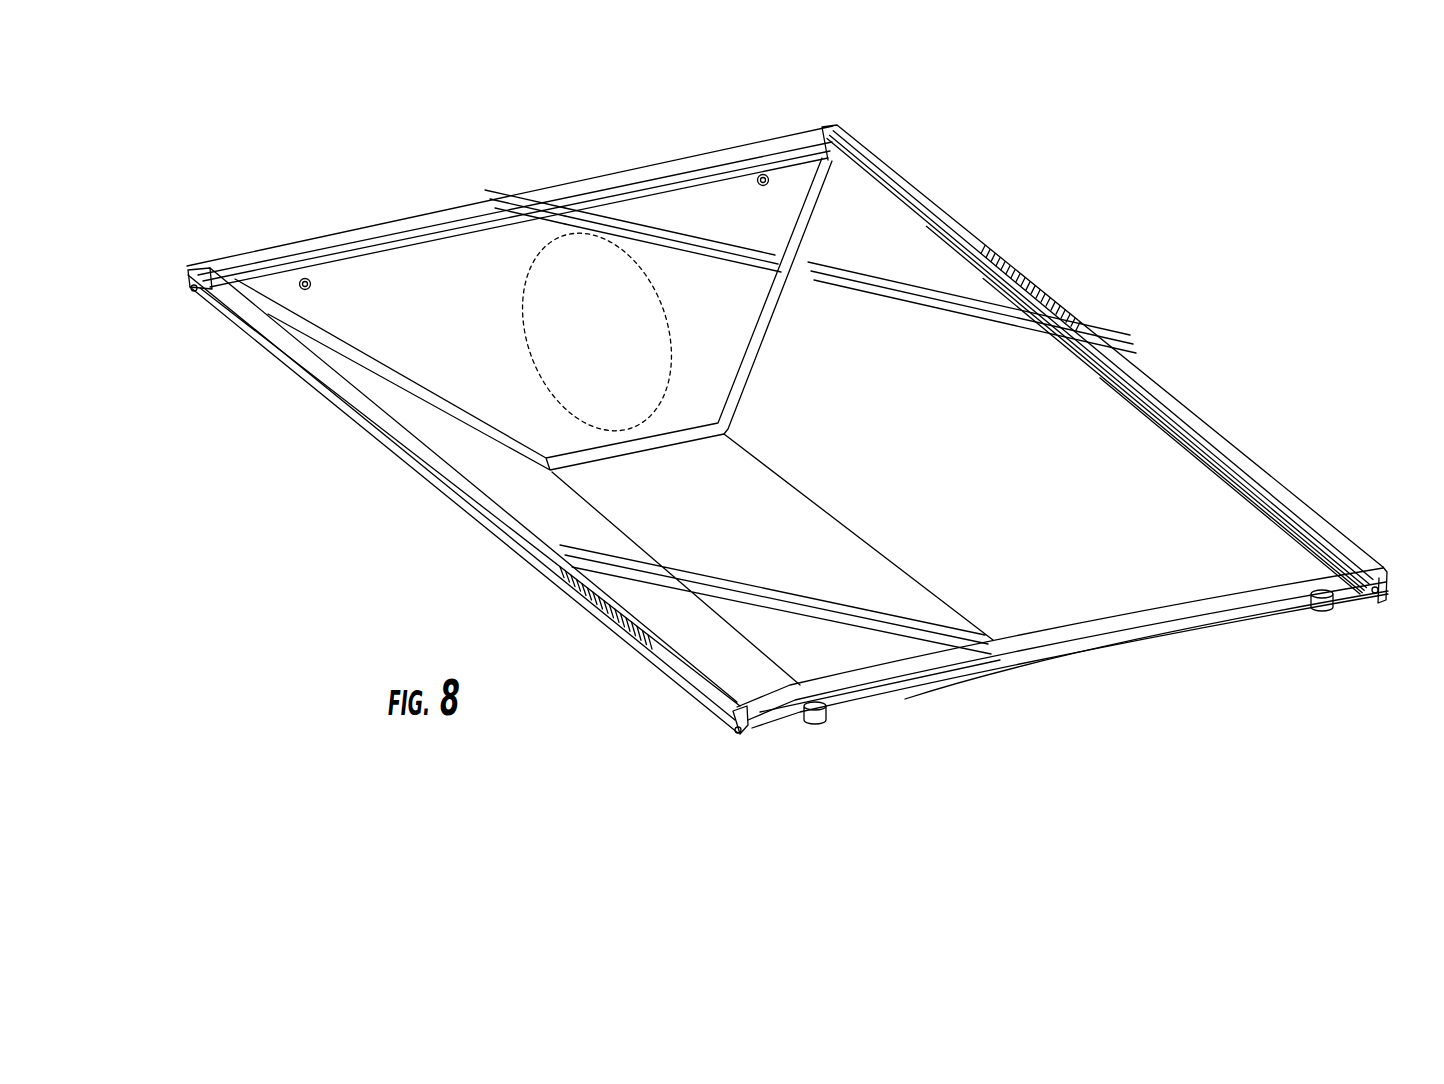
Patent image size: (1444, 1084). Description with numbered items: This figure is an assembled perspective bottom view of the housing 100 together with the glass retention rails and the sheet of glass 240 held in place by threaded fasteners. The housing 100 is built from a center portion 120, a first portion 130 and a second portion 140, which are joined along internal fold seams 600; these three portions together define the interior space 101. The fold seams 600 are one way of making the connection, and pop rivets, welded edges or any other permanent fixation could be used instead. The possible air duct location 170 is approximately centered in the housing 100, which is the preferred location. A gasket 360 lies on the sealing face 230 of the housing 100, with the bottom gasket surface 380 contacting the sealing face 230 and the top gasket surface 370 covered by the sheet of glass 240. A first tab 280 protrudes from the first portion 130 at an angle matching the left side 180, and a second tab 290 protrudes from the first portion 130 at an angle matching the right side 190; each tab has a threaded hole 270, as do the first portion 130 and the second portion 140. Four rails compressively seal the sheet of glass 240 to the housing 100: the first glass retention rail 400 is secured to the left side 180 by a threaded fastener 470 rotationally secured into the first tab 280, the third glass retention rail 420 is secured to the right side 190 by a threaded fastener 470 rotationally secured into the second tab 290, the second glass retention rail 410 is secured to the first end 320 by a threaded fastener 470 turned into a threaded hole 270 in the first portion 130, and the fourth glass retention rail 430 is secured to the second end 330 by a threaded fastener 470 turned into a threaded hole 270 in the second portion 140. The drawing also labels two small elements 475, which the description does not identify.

The housing 100 is at (785, 390).
The interior space 101 is at (858, 521).
The center portion 120 is at (771, 578).
The first portion 130 is at (1068, 655).
The second portion 140 is at (673, 265).
The air duct location 170 is at (596, 332).
The left side 180 is at (1102, 357).
The right side 190 is at (465, 500).
The sealing face 230 is at (1145, 408).
The sheet of glass 240 is at (972, 285).
The threaded hole 270 is at (546, 244).
The first tab 280 is at (1385, 602).
The second tab 290 is at (755, 741).
The first end 320 is at (913, 702).
The second end 330 is at (515, 186).
The gasket 360 is at (1096, 362).
The top gasket surface 370 is at (1230, 486).
The bottom gasket surface 380 is at (1172, 435).
The first glass retention rail 400 is at (1039, 284).
The second glass retention rail 410 is at (1146, 652).
The third glass retention rail 420 is at (550, 603).
The fourth glass retention rail 430 is at (525, 182).
The threaded fastener 470 is at (787, 521).
The foot 475 is at (1070, 685).
The internal fold seams 600 is at (533, 329).